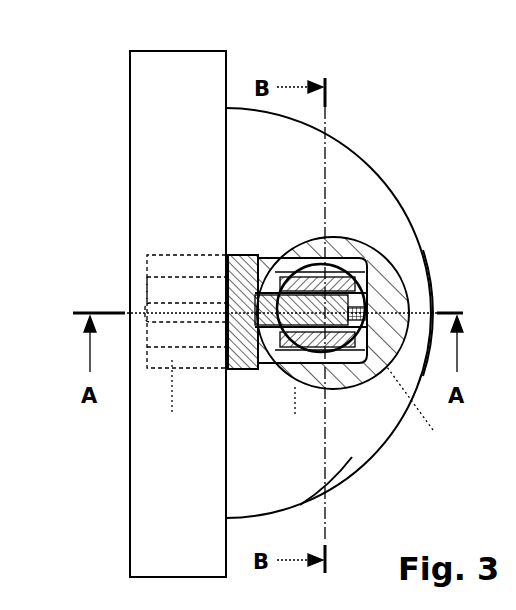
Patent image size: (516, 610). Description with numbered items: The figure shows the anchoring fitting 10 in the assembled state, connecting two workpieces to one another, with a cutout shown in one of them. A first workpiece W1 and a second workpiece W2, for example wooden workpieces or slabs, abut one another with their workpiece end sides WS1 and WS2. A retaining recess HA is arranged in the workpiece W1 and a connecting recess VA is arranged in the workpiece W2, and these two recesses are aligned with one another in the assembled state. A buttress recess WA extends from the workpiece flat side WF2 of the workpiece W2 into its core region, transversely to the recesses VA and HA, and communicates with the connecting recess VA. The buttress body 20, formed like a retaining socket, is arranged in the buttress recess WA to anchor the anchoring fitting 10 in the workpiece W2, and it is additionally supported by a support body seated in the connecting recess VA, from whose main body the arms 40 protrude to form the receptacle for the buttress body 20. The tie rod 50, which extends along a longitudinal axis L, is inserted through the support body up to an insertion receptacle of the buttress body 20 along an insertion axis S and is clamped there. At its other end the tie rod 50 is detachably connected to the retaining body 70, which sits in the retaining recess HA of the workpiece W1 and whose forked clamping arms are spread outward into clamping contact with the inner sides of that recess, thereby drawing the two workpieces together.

The anchoring fitting 10 is at (376, 255).
The buttress body 20 is at (400, 285).
The arms 40 is at (349, 262).
The tie rod 50 is at (193, 292).
The retaining body 70 is at (160, 268).
The workpiece W1 is at (124, 88).
The workpiece W2 is at (380, 156).
The workpiece end side WS1 is at (226, 61).
The workpiece end side WS2 is at (223, 162).
The insertion axis S is at (427, 302).
The buttress recess WA is at (428, 412).
The workpiece flat side WF2 is at (352, 457).
The retaining recess HA is at (180, 406).
The connecting recess VA is at (293, 417).
The longitudinal axis L is at (143, 290).